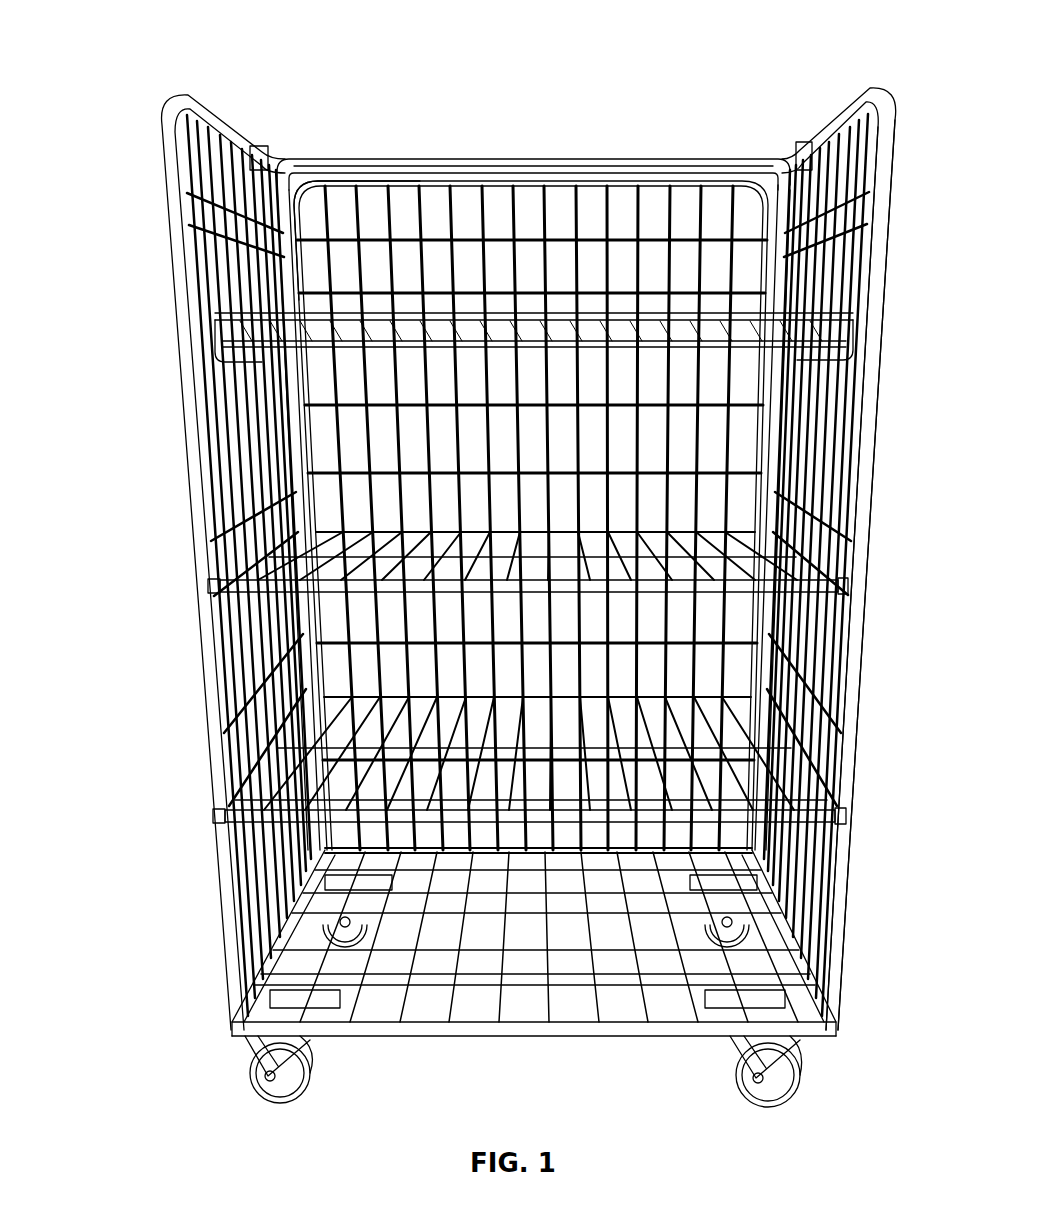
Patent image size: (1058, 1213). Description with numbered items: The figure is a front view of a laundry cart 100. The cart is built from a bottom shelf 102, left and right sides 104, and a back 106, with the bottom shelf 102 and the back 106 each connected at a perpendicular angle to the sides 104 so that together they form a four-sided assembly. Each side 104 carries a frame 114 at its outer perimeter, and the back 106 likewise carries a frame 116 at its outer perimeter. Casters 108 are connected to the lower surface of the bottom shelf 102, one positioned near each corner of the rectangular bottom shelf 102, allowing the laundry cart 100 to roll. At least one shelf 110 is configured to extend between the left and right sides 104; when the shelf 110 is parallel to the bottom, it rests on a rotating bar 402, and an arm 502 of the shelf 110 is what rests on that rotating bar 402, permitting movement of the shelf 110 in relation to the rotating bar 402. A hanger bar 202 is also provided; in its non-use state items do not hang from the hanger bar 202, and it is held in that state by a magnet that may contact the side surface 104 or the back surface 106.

The laundry cart 100 is at (872, 46).
The bottom shelf 102 is at (830, 1005).
The left and right sides 104 is at (875, 440).
The back 106 is at (570, 265).
The casters 108 is at (793, 1087).
The shelf 110 is at (845, 602).
The frame 114 is at (885, 292).
The frame 116 is at (355, 178).
The hanger bar 202 is at (525, 163).
The rotating bar 402 is at (214, 594).
The arm 502 is at (223, 362).